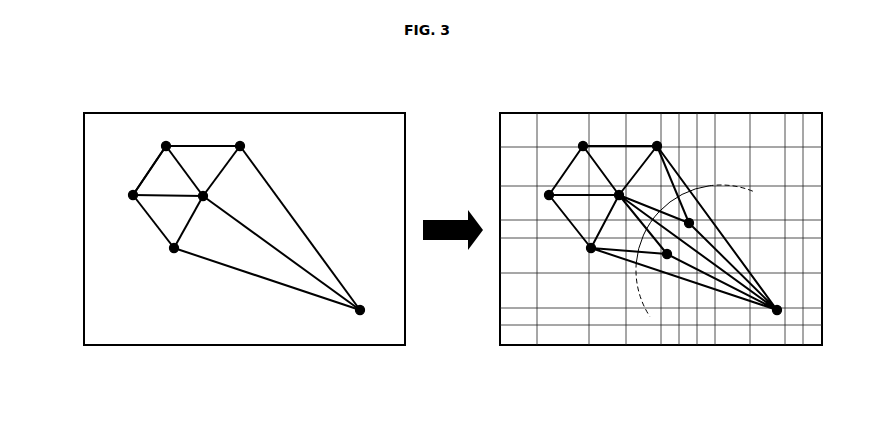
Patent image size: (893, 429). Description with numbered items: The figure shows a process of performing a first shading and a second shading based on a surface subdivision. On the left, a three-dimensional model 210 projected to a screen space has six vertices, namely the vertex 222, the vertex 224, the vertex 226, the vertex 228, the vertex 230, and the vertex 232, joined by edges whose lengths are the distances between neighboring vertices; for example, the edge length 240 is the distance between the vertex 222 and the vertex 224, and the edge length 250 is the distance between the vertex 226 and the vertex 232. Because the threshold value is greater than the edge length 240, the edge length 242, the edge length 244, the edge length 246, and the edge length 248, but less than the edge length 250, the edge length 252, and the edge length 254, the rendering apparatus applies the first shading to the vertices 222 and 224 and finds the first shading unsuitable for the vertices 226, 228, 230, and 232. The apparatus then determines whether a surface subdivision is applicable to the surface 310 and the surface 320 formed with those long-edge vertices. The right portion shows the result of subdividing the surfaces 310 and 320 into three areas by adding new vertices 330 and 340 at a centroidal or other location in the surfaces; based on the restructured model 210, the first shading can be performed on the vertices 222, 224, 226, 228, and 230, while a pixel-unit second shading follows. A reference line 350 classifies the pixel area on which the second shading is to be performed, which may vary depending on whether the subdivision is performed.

The 3D model 210 is at (295, 159).
The vertex 222 is at (166, 142).
The vertex 224 is at (129, 194).
The vertex 226 is at (170, 252).
The vertex 228 is at (203, 203).
The vertex 230 is at (245, 146).
The vertex 232 is at (362, 315).
The edge length 240 is at (150, 170).
The edge length 242 is at (224, 146).
The edge length 244 is at (183, 167).
The edge length 246 is at (158, 193).
The edge length 248 is at (162, 232).
The edge length 250 is at (307, 293).
The edge length 252 is at (283, 253).
The edge length 254 is at (276, 190).
The surface 310 is at (256, 262).
The surface 320 is at (279, 223).
The new vertex 330 is at (668, 259).
The new vertex 340 is at (690, 218).
The reference line 350 is at (678, 192).